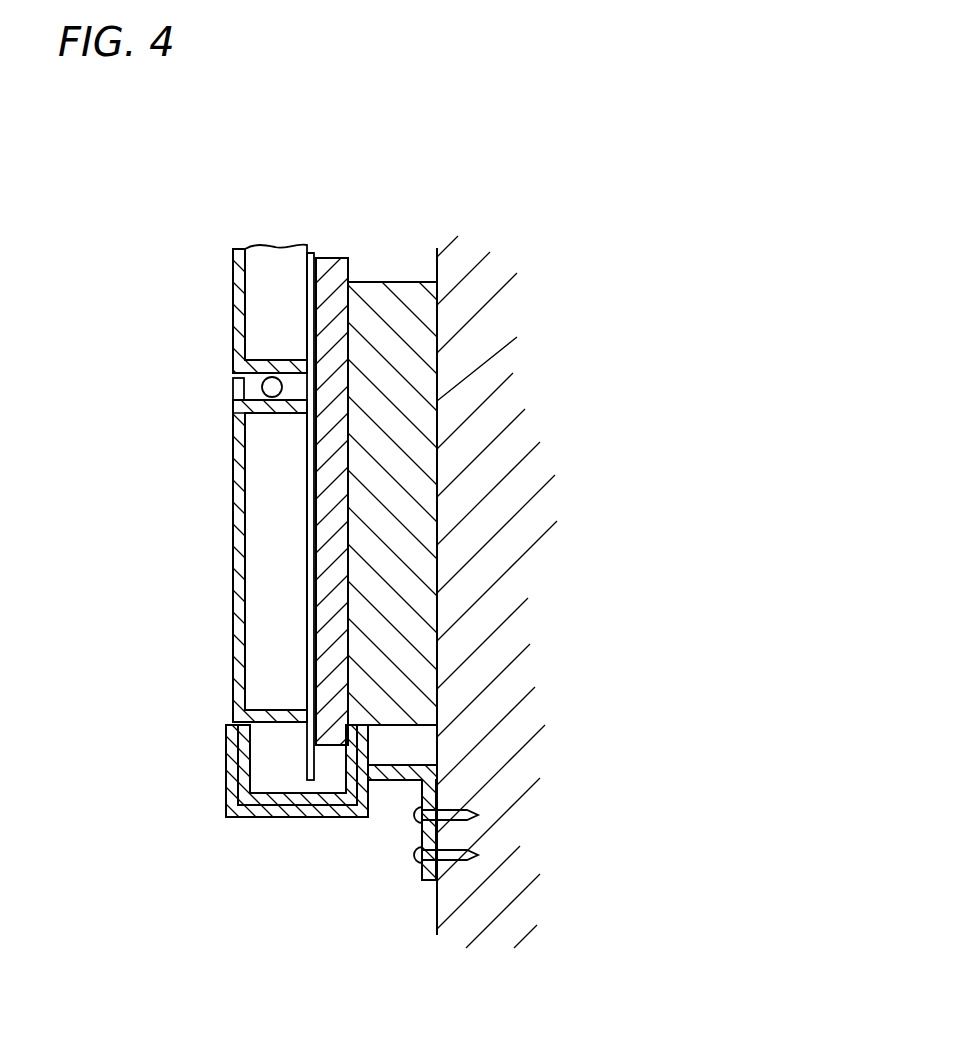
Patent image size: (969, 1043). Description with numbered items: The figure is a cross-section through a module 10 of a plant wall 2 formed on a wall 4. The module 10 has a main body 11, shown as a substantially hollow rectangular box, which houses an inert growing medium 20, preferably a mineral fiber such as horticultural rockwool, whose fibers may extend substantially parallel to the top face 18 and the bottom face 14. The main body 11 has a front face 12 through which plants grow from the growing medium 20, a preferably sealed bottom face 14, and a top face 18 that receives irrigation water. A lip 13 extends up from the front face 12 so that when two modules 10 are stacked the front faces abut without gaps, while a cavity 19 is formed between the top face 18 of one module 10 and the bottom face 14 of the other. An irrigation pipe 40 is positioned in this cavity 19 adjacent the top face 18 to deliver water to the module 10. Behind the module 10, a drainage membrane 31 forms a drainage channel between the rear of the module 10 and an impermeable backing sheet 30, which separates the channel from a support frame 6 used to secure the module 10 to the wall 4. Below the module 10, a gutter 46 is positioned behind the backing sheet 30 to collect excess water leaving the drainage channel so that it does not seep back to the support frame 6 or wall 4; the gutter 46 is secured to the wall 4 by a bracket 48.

The plant wall 2 is at (82, 255).
The wall 4 is at (505, 313).
The support frame 6 is at (394, 282).
The module 10 is at (195, 698).
The main body 11 is at (210, 668).
The front face 12 is at (233, 630).
The lip 13 is at (233, 388).
The bottom face 14 is at (275, 725).
The top face 18 is at (294, 398).
The cavity 19 is at (243, 400).
The inert growing medium 20 is at (258, 335).
The impermeable backing sheet 30 is at (332, 257).
The drainage membrane 31 is at (315, 253).
The pipe 40 is at (273, 378).
The gutter 46 is at (247, 782).
The bracket 48 is at (397, 780).